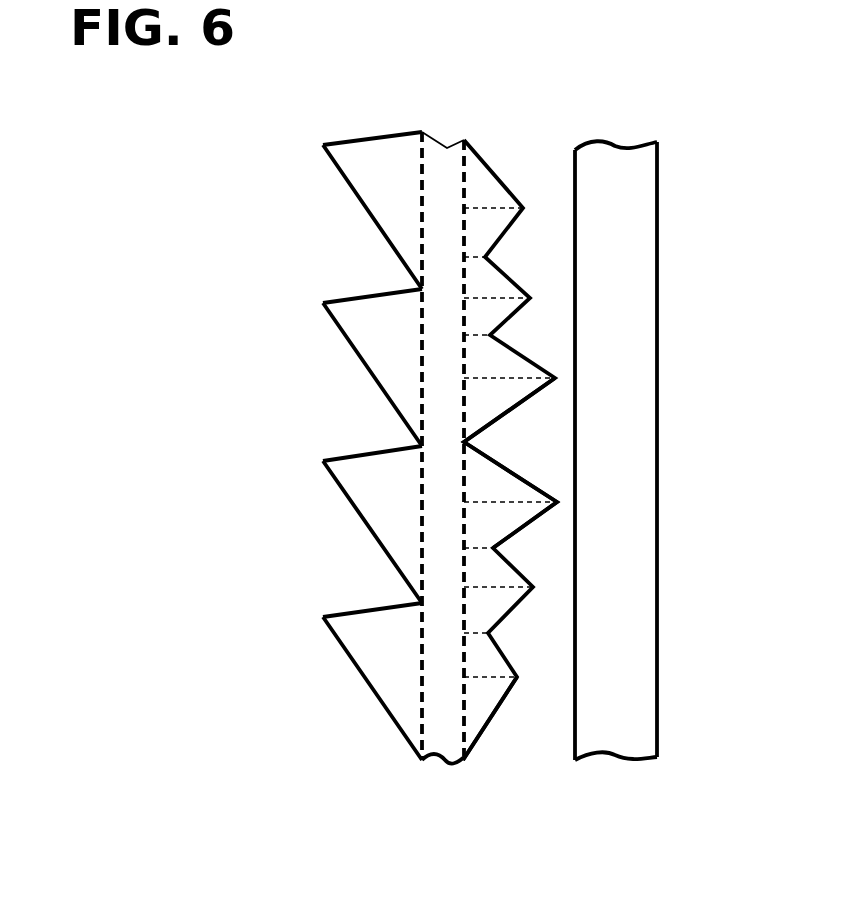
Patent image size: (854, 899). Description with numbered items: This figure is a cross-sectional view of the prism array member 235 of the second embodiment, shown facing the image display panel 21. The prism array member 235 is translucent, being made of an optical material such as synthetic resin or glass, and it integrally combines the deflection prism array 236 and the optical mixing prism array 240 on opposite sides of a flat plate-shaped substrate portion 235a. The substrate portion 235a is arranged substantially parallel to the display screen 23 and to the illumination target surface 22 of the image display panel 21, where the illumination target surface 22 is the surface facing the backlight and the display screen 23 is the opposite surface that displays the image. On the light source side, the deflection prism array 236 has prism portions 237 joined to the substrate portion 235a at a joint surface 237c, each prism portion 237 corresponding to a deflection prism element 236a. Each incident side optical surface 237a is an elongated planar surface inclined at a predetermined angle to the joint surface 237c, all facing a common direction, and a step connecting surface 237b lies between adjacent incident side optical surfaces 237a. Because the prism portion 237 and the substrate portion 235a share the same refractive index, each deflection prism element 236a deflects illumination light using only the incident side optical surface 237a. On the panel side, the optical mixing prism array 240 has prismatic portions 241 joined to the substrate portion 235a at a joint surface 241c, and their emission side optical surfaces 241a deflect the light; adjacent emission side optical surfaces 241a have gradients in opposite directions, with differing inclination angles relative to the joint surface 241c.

The image display panel 21 is at (660, 404).
The illumination target surface 22 is at (572, 722).
The display screen 23 is at (660, 722).
The prism array member 235 is at (545, 64).
The substrate portion 235a is at (447, 147).
The deflection prism array 236 is at (390, 132).
The deflection prism element 236a is at (345, 469).
The prism portion 237 is at (378, 211).
The incident side optical surface 237a is at (345, 181).
The step connecting surface 237b is at (360, 138).
The joint surface 237c is at (427, 713).
The optical mixing prism array 240 is at (502, 178).
The prismatic portion 241 is at (503, 195).
The emission side optical surface 241a is at (500, 422).
The joint surface 241c is at (463, 737).